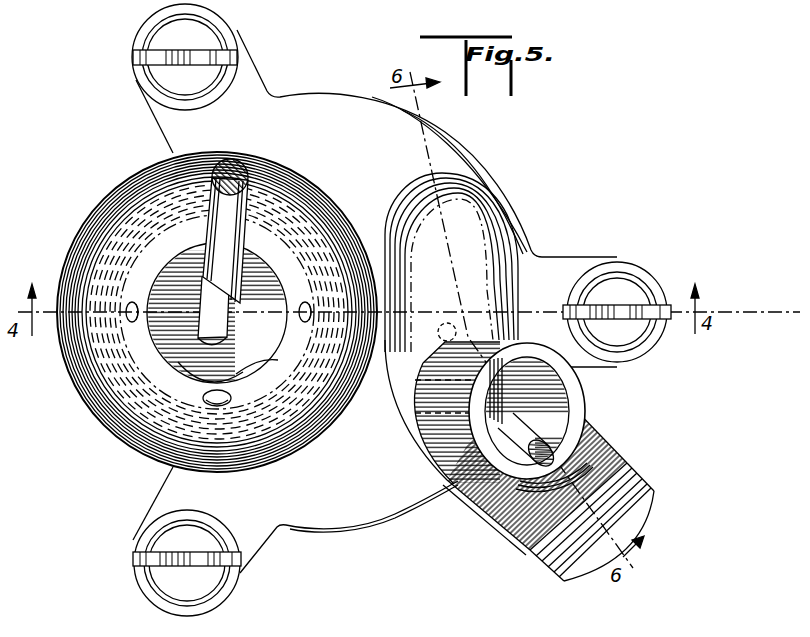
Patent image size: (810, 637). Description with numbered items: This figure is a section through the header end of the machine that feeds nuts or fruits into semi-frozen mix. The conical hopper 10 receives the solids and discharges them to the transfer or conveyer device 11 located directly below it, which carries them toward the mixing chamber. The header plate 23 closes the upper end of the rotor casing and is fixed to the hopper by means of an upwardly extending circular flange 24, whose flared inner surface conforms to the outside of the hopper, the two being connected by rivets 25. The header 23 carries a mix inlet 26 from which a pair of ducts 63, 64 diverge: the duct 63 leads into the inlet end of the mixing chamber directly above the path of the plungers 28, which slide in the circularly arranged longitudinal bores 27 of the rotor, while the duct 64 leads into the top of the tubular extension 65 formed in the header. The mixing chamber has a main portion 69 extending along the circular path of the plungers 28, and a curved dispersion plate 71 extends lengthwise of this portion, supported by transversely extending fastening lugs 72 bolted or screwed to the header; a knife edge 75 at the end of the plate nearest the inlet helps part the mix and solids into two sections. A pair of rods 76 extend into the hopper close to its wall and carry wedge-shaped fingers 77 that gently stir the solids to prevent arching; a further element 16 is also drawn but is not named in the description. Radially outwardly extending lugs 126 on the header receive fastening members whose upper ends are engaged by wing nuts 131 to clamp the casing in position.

The conical hopper 10 is at (62, 394).
The transfer or conveyer device 11 is at (168, 346).
The valve stem 16 is at (243, 231).
The header plate 23 is at (355, 515).
The circular flange 24 is at (322, 226).
The rivets 25 is at (304, 302).
The mix inlet 26 is at (555, 400).
The longitudinal bores 27 is at (262, 368).
The plungers 28 is at (190, 370).
The duct 63 is at (488, 426).
The duct 64 is at (524, 434).
The tubular extension 65 is at (502, 523).
The main portion of the mixing chamber 69 is at (498, 243).
The dispersion plate 71 is at (476, 300).
The fastening lugs 72 is at (444, 368).
The knife edge 75 is at (454, 258).
The rods 76 is at (240, 228).
The fingers 77 is at (215, 318).
The lugs 126 is at (160, 118).
The wing nuts 131 is at (136, 54).